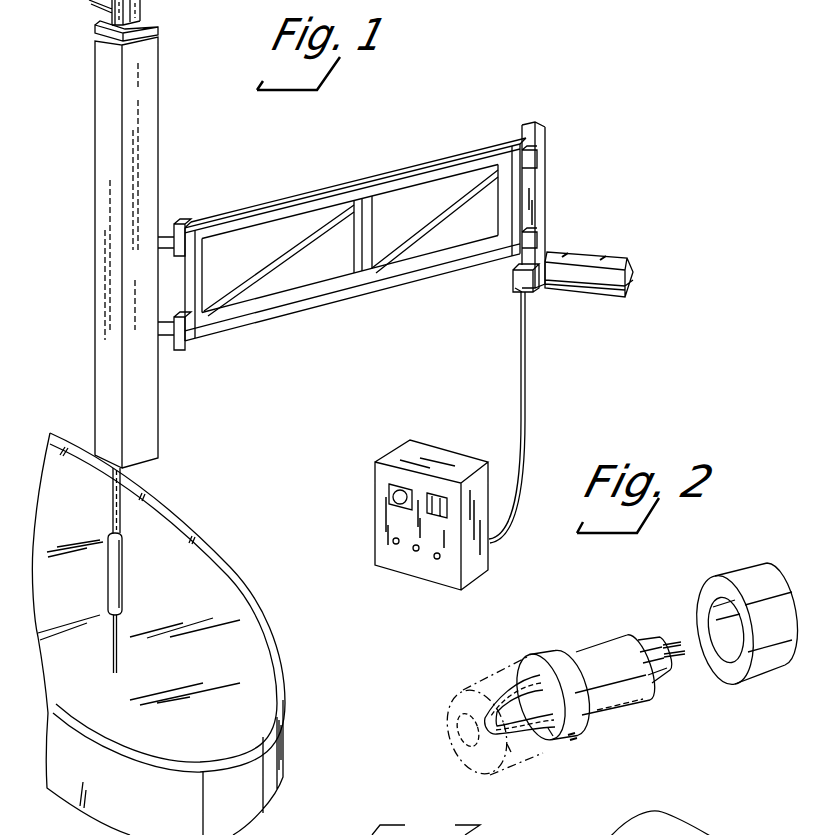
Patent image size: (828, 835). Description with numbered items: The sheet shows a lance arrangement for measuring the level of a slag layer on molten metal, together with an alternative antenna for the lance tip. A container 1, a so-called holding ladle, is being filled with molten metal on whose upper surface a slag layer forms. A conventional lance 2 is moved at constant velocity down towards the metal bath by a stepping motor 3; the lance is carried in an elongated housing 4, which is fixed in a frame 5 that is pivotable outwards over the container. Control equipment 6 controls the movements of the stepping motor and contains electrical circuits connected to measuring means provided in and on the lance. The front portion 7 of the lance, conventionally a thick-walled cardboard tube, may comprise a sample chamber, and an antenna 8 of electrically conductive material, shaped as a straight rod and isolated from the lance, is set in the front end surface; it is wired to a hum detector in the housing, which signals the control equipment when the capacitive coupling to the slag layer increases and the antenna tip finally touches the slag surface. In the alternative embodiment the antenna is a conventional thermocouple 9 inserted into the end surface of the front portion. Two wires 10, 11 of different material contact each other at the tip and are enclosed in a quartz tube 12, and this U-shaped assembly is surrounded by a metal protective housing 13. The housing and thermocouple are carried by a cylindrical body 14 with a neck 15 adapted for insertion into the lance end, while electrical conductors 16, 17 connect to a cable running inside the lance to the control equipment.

In FIG. 1, the container 1 is at (244, 812).
In FIG. 1, the lance 2 is at (113, 507).
In FIG. 1, the stepping motor 3 is at (98, 4).
In FIG. 1, the elongated housing 4 is at (104, 166).
In FIG. 1, the frame 5 is at (376, 192).
In FIG. 1, the control equipment 6 is at (397, 452).
In FIG. 1, the front portion 7 is at (110, 580).
In FIG. 2, the front portion 7 is at (729, 578).
In FIG. 1, the antenna 8 is at (113, 647).
In FIG. 2, the thermocouple 9 is at (468, 731).
In FIG. 2, the wire 10 is at (502, 672).
In FIG. 2, the wire 11 is at (535, 752).
In FIG. 2, the quartz tube 12 is at (550, 738).
In FIG. 2, the metal protective housing 13 is at (510, 748).
In FIG. 2, the cylindrical body 14 is at (558, 664).
In FIG. 2, the neck 15 is at (615, 655).
In FIG. 2, the electrical conductor 16 is at (668, 642).
In FIG. 2, the electrical conductor 17 is at (677, 659).